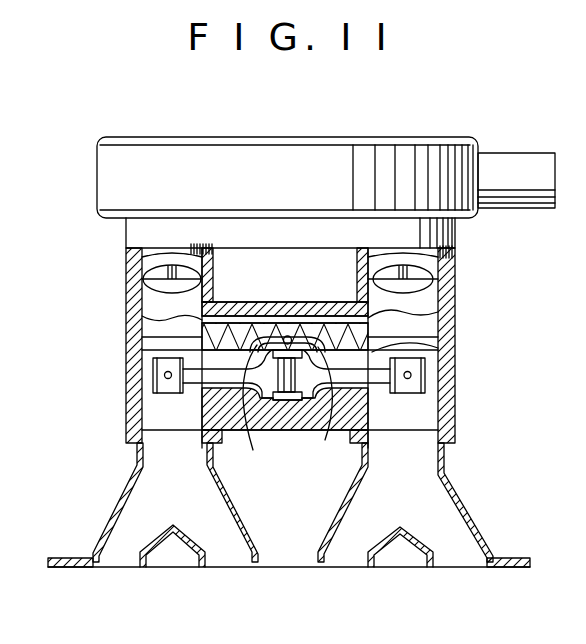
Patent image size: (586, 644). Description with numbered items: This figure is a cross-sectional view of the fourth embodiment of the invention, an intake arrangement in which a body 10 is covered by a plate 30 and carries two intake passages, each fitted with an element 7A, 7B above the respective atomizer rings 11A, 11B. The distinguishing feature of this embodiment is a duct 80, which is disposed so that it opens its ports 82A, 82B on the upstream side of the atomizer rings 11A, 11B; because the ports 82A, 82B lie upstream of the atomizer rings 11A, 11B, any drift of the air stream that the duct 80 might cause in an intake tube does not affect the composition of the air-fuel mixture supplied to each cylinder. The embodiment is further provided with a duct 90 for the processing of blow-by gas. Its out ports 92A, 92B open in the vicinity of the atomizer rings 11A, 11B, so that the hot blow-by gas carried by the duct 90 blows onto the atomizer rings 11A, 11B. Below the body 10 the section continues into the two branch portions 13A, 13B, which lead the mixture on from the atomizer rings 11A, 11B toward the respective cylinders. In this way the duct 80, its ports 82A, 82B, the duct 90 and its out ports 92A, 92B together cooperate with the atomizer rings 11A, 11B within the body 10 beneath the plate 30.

The housing body 10 is at (440, 352).
The cover plate 30 is at (397, 137).
The left lens 7A is at (162, 272).
The right lens 7B is at (443, 273).
The port 82A is at (142, 318).
The port 82B is at (453, 310).
The duct 80 is at (307, 315).
The duct 90 is at (277, 337).
The atomizer ring 11A is at (153, 377).
The atomizer ring 11B is at (430, 382).
The out port 92A is at (247, 410).
The out port 92B is at (324, 406).
The left leg 13A is at (118, 505).
The right leg 13B is at (466, 510).